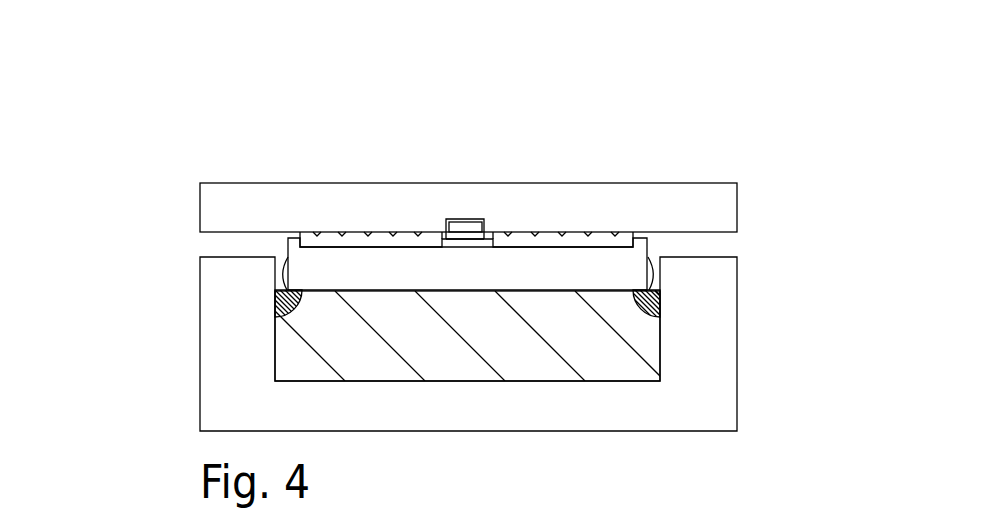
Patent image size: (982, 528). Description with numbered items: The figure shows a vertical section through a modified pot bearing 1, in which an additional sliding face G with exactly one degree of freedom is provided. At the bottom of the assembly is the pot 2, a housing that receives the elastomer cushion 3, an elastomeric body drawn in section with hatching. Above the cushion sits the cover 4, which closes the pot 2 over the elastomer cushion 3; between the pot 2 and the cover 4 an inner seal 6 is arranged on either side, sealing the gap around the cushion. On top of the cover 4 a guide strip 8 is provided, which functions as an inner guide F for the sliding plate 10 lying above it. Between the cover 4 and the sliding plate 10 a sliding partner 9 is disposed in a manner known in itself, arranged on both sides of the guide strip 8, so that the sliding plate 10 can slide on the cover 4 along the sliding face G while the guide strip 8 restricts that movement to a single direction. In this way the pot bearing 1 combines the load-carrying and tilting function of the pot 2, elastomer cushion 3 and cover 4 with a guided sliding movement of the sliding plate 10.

The pot bearing 1 is at (625, 127).
The pot 2 is at (703, 366).
The elastomer cushion 3 is at (640, 333).
The cover 4 is at (628, 270).
The inner seal 6 is at (650, 297).
The guide strip 8 is at (458, 227).
The sliding partner 9 is at (353, 238).
The sliding plate 10 is at (622, 220).
The inner guide F is at (490, 213).
The sliding face G is at (288, 238).